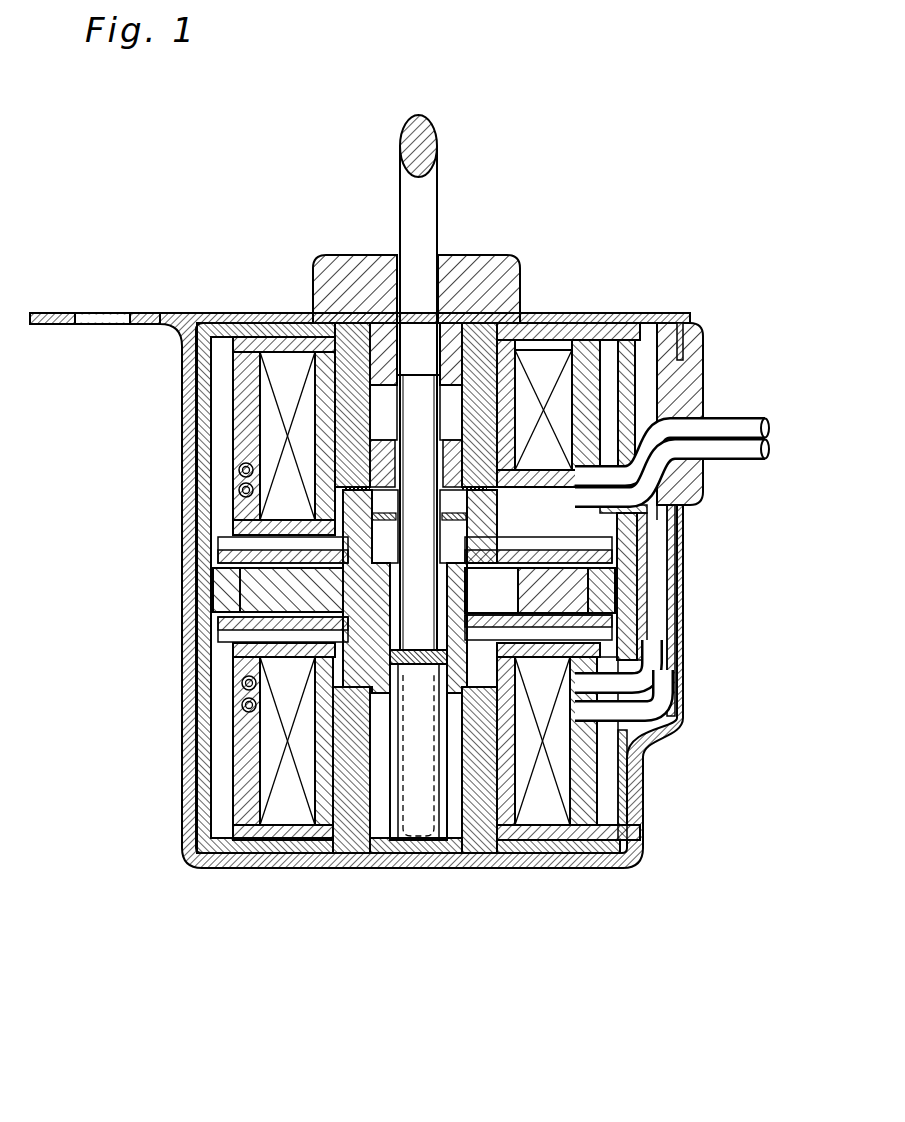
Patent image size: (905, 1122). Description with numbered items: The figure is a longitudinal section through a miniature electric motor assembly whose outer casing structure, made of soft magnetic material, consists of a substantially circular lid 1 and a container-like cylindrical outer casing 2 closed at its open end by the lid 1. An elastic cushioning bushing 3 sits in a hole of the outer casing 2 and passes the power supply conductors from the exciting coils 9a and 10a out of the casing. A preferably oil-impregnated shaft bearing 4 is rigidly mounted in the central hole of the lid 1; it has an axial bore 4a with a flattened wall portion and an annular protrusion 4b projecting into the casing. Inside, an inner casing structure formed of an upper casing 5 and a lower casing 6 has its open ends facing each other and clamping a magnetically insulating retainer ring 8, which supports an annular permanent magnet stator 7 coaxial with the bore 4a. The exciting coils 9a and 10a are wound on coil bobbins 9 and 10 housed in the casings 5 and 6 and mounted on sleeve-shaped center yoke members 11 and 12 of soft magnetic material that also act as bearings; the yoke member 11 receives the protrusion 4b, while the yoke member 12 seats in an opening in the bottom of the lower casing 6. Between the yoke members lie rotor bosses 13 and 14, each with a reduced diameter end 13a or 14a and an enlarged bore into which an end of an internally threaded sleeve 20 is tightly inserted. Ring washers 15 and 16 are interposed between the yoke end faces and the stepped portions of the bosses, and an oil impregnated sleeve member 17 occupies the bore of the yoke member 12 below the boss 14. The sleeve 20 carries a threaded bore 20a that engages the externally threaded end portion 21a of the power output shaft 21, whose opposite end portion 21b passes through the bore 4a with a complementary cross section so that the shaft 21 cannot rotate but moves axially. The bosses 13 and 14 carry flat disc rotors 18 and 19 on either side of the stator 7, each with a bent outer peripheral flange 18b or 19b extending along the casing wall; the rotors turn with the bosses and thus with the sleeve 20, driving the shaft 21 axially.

The lid 1 is at (230, 312).
The outer casing 2 is at (680, 695).
The elastic cushioning bushing 3 is at (690, 380).
The shaft bearing 4 is at (455, 268).
The axial bore 4a is at (400, 262).
The annular protrusion 4b is at (470, 325).
The upper casing 5 is at (203, 418).
The lower casing 6 is at (190, 800).
The annular permanent magnet stator 7 is at (613, 613).
The retainer ring 8 is at (603, 588).
The coil bobbin 9 is at (557, 363).
The exciting coil 9a is at (600, 340).
The coil bobbin 10 is at (500, 820).
The exciting coil 10a is at (550, 812).
The center yoke member 11 is at (350, 345).
The center yoke member 12 is at (360, 820).
The rotor boss 13 is at (237, 458).
The reduced diameter end 13a is at (375, 455).
The rotor boss 14 is at (240, 741).
The reduced diameter end 14a is at (380, 722).
The ring washer 15 is at (300, 505).
The ring washer 16 is at (337, 690).
The oil impregnated sleeve member 17 is at (452, 830).
The rotor 18 is at (583, 550).
The outer peripheral flange 18b is at (240, 550).
The rotor 19 is at (633, 653).
The outer peripheral flange 19b is at (213, 630).
The internally threaded sleeve 20 is at (410, 590).
The threaded bore 20a is at (562, 581).
The power output shaft 21 is at (412, 132).
The externally threaded end portion 21a is at (375, 585).
The opposite end portion 21b is at (423, 190).